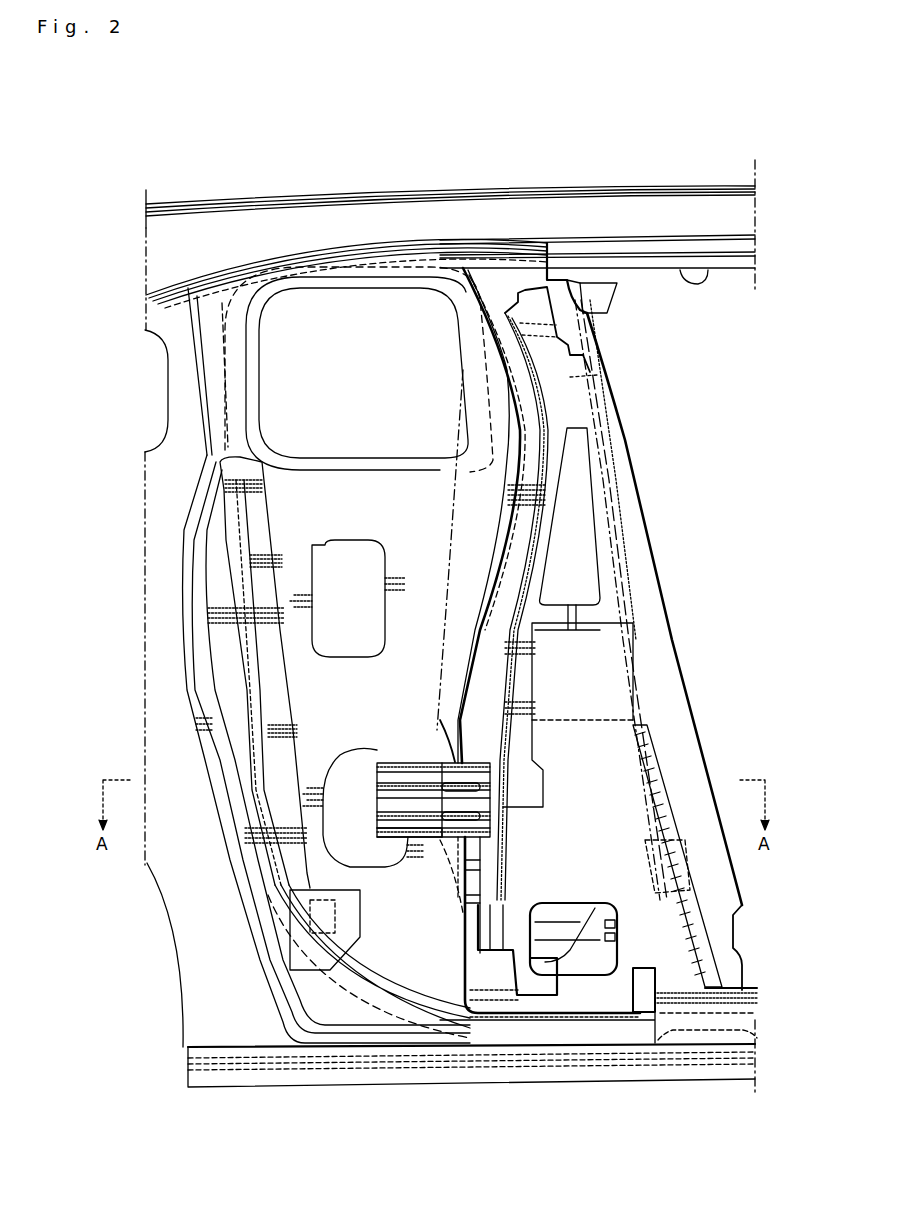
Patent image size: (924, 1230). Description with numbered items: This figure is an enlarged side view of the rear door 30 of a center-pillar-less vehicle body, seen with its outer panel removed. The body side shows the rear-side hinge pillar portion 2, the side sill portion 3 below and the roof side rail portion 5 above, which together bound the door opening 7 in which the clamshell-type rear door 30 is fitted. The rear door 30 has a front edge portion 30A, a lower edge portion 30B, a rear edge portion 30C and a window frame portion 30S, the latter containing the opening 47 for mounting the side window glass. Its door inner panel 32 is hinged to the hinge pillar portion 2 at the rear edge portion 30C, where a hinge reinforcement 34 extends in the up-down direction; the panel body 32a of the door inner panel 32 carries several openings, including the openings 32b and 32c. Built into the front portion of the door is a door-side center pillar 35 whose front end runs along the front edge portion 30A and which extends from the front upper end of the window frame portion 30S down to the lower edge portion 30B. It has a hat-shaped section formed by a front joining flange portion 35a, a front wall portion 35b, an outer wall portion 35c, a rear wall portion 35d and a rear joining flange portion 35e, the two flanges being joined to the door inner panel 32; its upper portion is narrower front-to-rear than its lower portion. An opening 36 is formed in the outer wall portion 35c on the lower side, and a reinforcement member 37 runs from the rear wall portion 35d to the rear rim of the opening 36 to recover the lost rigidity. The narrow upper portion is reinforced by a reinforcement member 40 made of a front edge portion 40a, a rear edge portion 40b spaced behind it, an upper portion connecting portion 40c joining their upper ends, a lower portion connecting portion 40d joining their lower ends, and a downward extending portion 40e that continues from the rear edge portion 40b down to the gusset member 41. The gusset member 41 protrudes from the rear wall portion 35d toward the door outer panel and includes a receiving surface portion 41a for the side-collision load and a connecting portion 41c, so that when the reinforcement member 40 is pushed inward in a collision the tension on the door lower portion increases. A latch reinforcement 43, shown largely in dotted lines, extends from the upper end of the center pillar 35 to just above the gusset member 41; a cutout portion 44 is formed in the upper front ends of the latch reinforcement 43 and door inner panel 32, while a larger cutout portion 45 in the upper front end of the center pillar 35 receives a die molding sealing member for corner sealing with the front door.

The hinge pillar portion 2 is at (150, 672).
The side sill portion 3 is at (483, 1085).
The roof side rail portion 5 is at (457, 215).
The door opening 7 is at (697, 270).
The rear door 30 is at (330, 262).
The front edge portion 30A is at (667, 592).
The lower edge portion 30B is at (540, 1047).
The rear edge portion 30C is at (190, 700).
The window frame portion 30S is at (218, 378).
The door inner panel 32 is at (298, 520).
The panel body 32a is at (345, 492).
The opening 32b is at (385, 625).
The opening 32c is at (337, 757).
The hinge reinforcement 34 is at (290, 684).
The center pillar 35 is at (490, 553).
The joining flange portion 35a is at (690, 725).
The front wall portion 35b is at (668, 812).
The outer wall portion 35c is at (598, 815).
The rear wall portion 35d is at (470, 866).
The joining flange portion 35e is at (475, 874).
The opening 36 is at (567, 905).
The reinforcement member 37 is at (520, 930).
The reinforcement member 40 is at (615, 458).
The front edge portion 40a is at (608, 495).
The rear edge portion 40b is at (545, 498).
The upper portion connecting portion 40c is at (572, 378).
The lower portion connecting portion 40d is at (573, 628).
The downward extending portion 40e is at (530, 700).
The gusset member 41 is at (385, 762).
The receiving surface portion 41a is at (390, 840).
The connecting portion 41c is at (450, 760).
The latch reinforcement 43 is at (595, 415).
The cutout portion 44 is at (592, 280).
The cutout portion 45 is at (600, 302).
The opening 47 is at (355, 371).